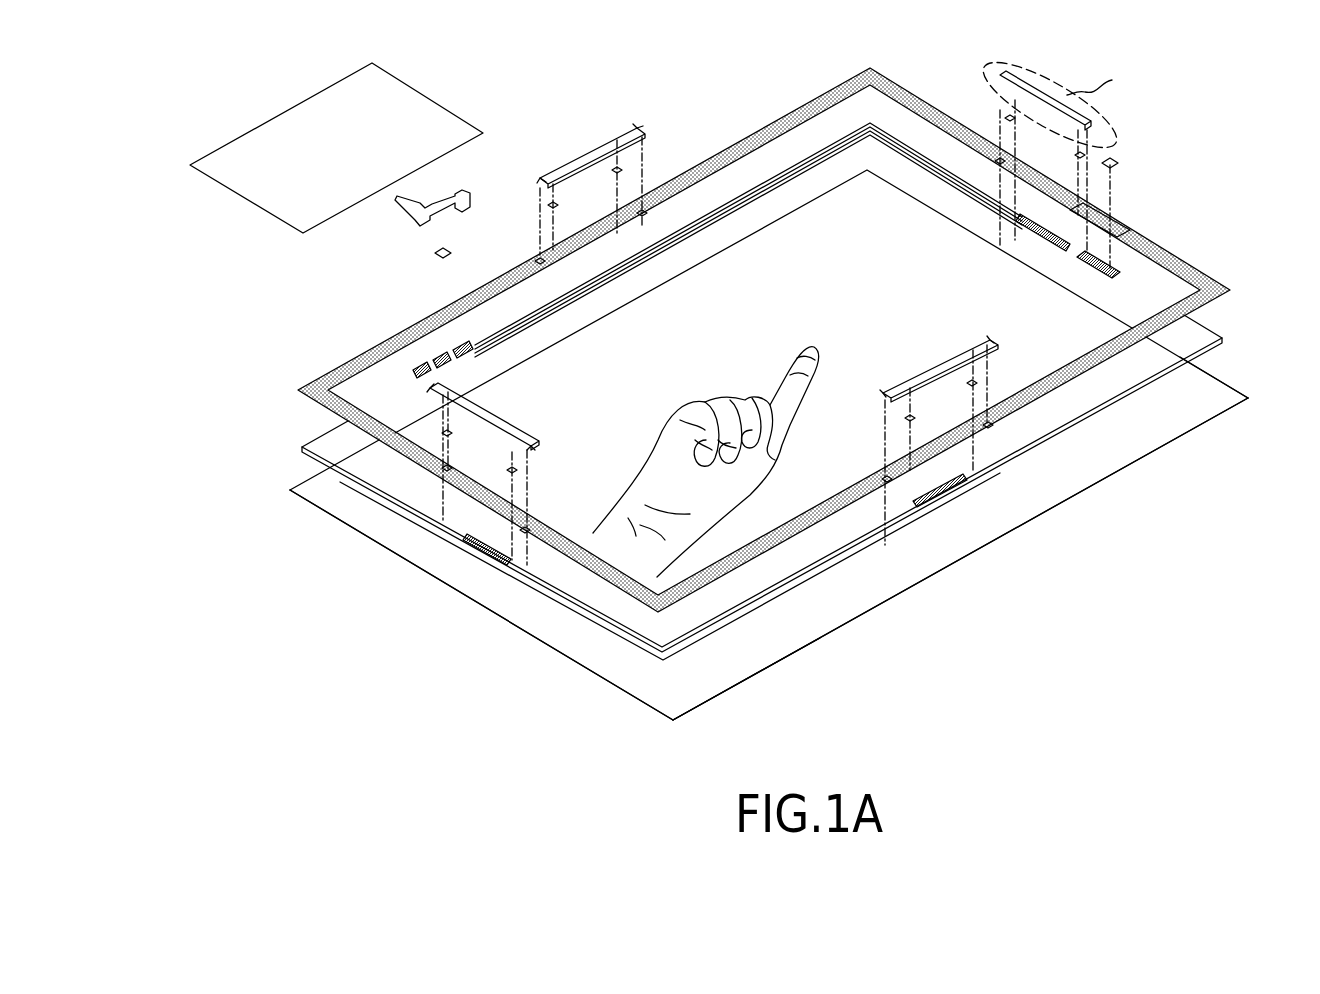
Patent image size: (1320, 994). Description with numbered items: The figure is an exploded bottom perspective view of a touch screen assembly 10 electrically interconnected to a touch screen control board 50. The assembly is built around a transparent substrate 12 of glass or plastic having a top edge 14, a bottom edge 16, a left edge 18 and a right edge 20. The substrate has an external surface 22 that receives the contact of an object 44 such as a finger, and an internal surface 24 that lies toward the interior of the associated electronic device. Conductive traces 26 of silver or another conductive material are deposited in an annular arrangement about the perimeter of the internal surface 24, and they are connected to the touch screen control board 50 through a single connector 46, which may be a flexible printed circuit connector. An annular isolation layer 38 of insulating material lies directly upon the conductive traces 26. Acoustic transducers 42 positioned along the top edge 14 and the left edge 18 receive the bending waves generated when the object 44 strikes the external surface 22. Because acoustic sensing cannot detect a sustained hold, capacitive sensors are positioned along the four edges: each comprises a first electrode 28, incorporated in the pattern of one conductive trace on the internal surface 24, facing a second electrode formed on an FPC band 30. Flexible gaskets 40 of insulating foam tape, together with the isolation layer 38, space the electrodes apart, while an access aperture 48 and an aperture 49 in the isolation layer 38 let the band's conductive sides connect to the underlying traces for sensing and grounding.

The touch screen assembly 10 is at (1228, 112).
The transparent substrate 12 is at (708, 696).
The top edge 14 is at (1222, 382).
The bottom edge 16 is at (577, 668).
The left edge 18 is at (302, 468).
The right edge 20 is at (907, 596).
The external surface 22 is at (748, 688).
The internal surface 24 is at (1148, 442).
The conductive traces 26 is at (807, 147).
The first electrode 28 is at (593, 290).
The FPC band 30 is at (570, 150).
The isolation layer 38 is at (1232, 284).
The flexible gaskets 40 is at (553, 202).
The acoustic transducers 42 is at (447, 255).
The object 44 is at (778, 372).
The connector 46 is at (397, 200).
The access aperture 48 is at (540, 258).
The aperture 49 is at (642, 212).
The touch screen control board 50 is at (300, 105).